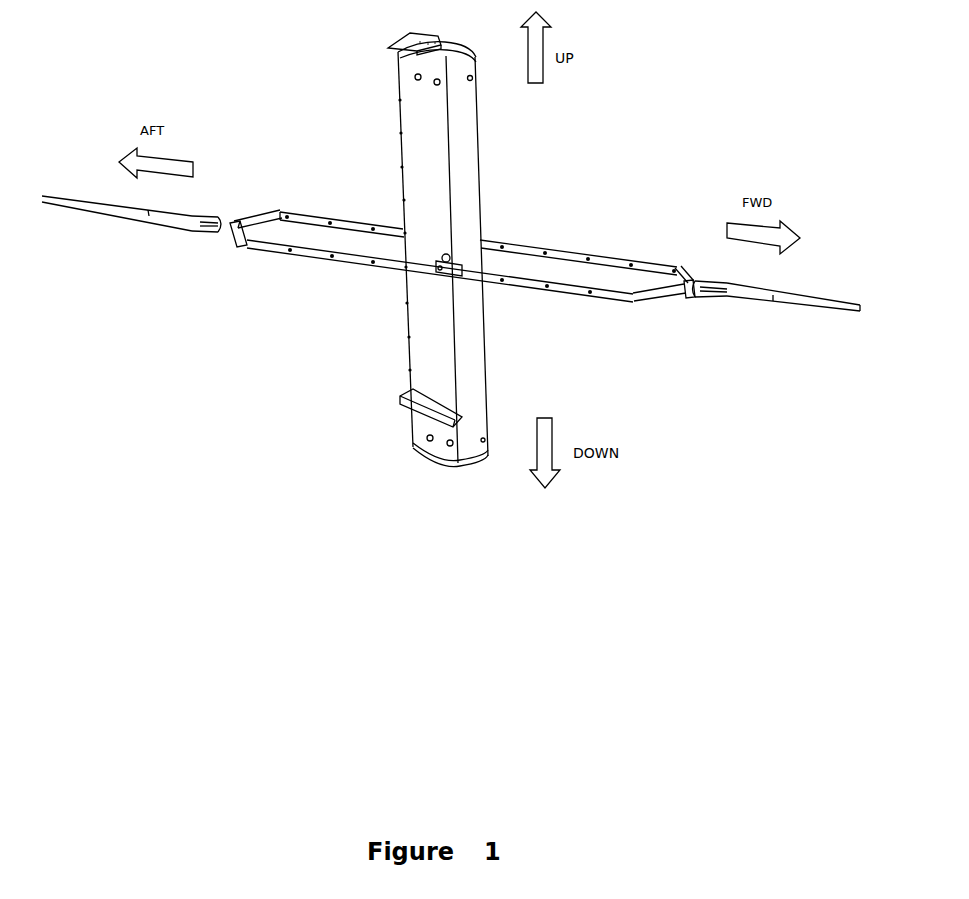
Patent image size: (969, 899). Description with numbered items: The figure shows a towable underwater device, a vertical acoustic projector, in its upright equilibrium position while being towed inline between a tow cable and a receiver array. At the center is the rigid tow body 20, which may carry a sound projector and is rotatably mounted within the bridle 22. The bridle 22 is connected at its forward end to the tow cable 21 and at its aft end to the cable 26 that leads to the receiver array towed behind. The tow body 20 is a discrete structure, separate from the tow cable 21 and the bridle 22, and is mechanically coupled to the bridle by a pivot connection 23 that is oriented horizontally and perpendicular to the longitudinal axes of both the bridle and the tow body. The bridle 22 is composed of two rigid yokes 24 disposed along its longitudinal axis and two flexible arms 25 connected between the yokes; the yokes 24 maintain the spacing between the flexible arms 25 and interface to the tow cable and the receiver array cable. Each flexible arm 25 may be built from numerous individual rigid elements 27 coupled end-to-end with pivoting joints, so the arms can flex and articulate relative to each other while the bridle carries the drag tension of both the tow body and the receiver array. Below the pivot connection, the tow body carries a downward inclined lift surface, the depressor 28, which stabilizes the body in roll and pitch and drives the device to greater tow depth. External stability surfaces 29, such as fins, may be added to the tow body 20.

The tow body 20 is at (482, 183).
The tow cable 21 is at (807, 308).
The bridle 22 is at (439, 242).
The pivot connection 23 is at (438, 273).
The rigid yoke 24 is at (235, 243).
The flexible arm 25 is at (584, 294).
The cable connected to a receiver array 26 is at (133, 223).
The rigid element 27 is at (567, 243).
The depressor 28 is at (442, 410).
The external stability surface 29 is at (398, 35).